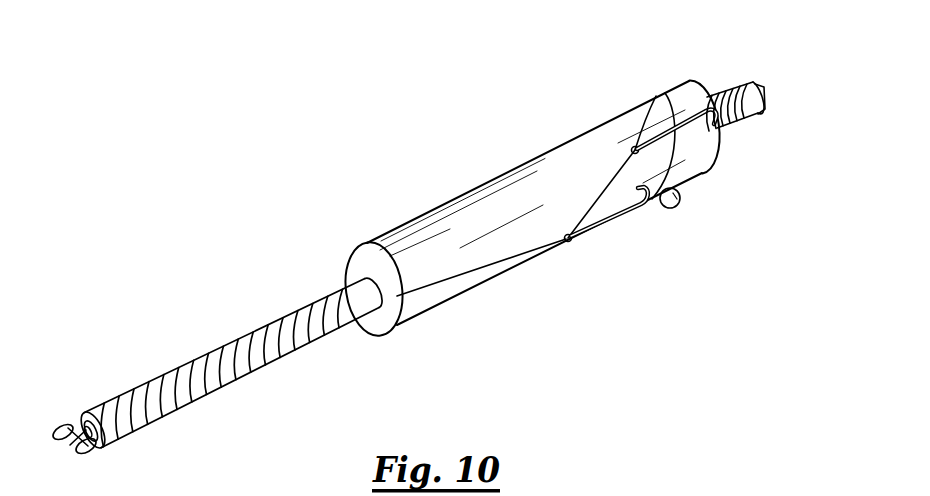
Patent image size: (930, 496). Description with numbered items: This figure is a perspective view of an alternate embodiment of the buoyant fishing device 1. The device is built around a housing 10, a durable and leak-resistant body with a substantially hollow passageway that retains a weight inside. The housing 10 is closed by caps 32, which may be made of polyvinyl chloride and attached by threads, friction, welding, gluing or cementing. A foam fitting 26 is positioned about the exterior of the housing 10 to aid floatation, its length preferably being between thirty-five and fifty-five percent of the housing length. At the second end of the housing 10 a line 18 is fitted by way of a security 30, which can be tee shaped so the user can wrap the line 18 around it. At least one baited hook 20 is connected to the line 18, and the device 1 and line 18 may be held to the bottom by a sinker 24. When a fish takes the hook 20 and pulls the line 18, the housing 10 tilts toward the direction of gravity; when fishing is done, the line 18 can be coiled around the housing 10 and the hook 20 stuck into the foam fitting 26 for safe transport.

The buoyant fishing device 1 is at (424, 158).
The housing 10 is at (348, 297).
The line 18 is at (443, 283).
The hook 20 is at (620, 223).
The sinker 24 is at (676, 200).
The foam fitting 26 is at (563, 146).
The security 30 is at (102, 408).
The caps 32 is at (737, 84).